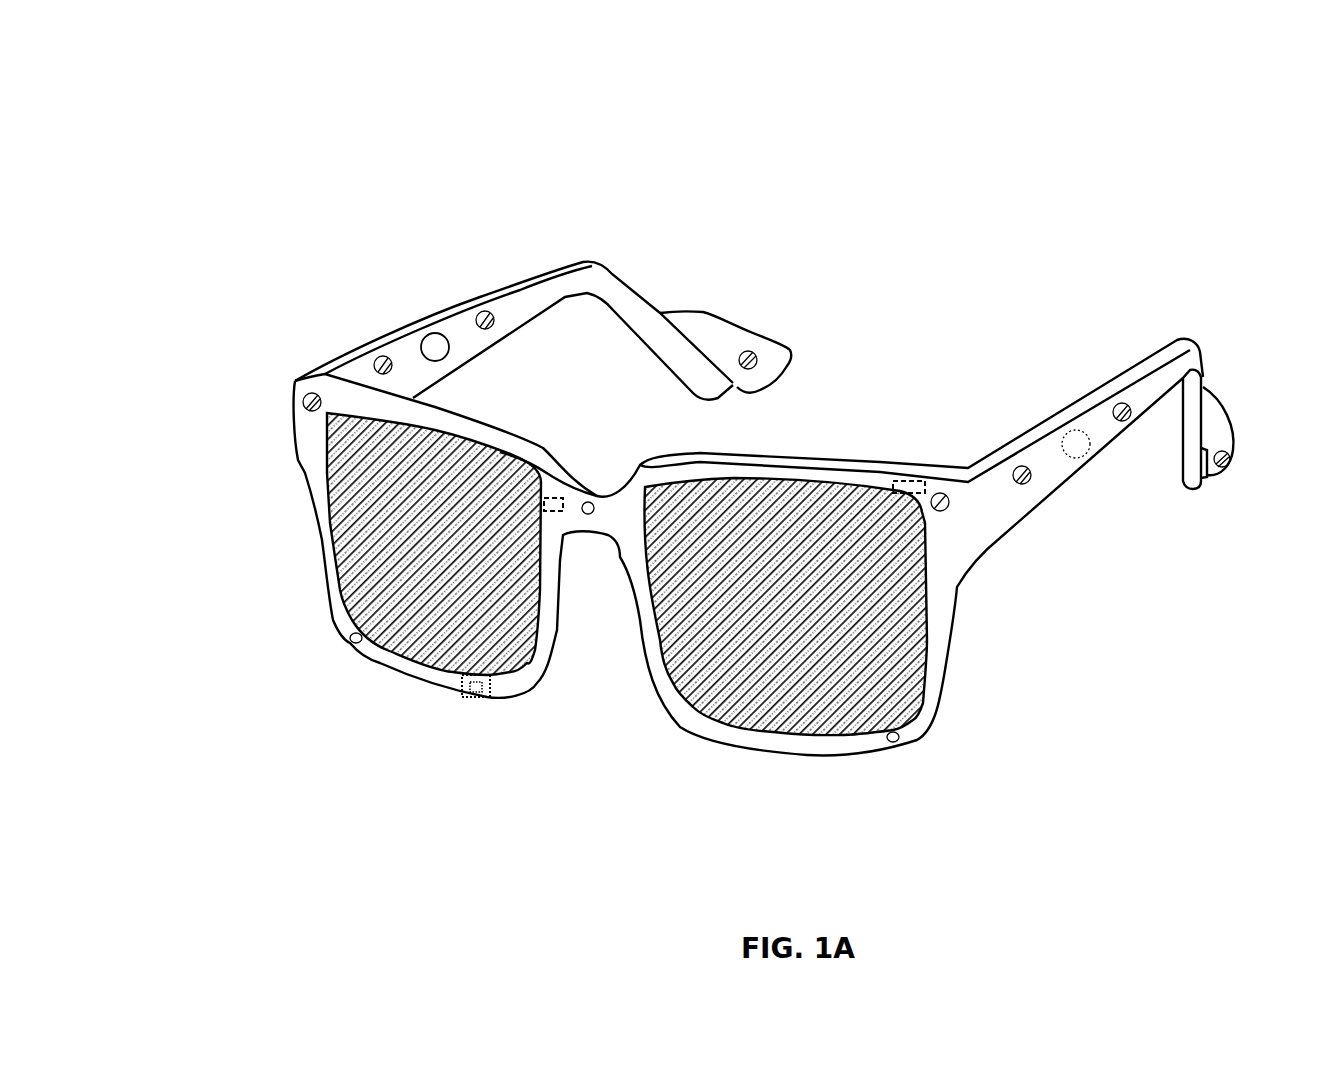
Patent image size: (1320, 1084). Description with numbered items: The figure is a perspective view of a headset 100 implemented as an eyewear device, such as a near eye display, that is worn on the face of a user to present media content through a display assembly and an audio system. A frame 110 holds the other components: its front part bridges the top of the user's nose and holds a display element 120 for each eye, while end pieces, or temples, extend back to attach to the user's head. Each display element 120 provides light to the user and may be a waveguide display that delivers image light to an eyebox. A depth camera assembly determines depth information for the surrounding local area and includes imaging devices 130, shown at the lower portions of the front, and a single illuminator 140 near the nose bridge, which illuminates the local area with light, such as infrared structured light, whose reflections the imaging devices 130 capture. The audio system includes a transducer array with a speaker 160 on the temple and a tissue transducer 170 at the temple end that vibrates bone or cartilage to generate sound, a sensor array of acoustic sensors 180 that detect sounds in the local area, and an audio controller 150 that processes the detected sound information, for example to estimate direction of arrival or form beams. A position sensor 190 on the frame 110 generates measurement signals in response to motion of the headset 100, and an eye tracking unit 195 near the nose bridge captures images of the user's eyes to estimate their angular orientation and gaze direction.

The headset 100 is at (699, 444).
The frame 110 is at (1185, 338).
The display element 120 is at (378, 541).
The imaging device 130 is at (352, 644).
The illuminator 140 is at (588, 515).
The audio controller 150 is at (902, 481).
The speaker 160 is at (437, 333).
The tissue transducer 170 is at (710, 314).
The acoustic sensor 180 is at (315, 393).
The position sensor 190 is at (473, 696).
The eye tracking unit 195 is at (556, 498).